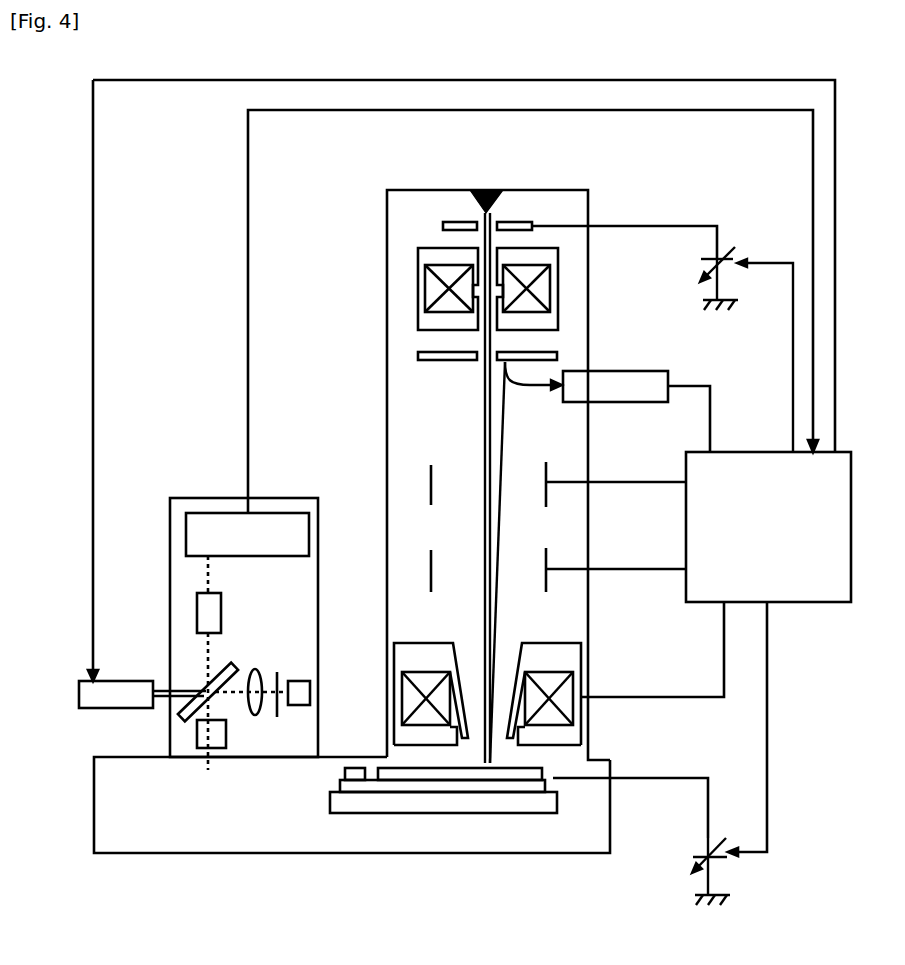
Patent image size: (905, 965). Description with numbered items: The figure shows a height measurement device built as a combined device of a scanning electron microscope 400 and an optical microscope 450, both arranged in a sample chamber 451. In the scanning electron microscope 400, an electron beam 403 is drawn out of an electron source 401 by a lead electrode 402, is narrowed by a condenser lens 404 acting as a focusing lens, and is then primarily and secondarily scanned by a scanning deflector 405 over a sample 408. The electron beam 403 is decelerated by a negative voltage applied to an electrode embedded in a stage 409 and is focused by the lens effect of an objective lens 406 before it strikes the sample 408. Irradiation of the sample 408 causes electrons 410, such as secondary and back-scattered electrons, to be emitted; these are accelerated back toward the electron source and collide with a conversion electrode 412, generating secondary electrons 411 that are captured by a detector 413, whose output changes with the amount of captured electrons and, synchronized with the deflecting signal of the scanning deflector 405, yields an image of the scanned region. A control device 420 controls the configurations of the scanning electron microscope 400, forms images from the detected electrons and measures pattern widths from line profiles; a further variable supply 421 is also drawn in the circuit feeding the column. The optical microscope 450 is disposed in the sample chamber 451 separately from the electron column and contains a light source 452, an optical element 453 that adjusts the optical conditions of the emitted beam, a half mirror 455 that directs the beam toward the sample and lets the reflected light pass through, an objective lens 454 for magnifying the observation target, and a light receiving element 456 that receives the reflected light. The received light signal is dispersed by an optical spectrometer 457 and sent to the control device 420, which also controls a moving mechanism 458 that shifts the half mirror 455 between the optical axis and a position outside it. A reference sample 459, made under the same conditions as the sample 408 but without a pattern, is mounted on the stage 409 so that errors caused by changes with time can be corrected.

The scanning electron microscope 400 is at (562, 184).
The electron source 401 is at (468, 203).
The lead electrode 402 is at (443, 224).
The electron beam 403 is at (483, 247).
The condenser lens 404 is at (418, 288).
The scanning deflector 405 is at (550, 493).
The objective lens 406 is at (575, 648).
The sample 408 is at (545, 768).
The stage 409 is at (557, 798).
The electrons 410 is at (505, 412).
The secondary electrons 411 is at (533, 388).
The conversion electrode 412 is at (418, 354).
The detector 413 is at (637, 371).
The control device 420 is at (800, 603).
The variable power supply 421 is at (723, 862).
The optical microscope 450 is at (287, 478).
The sample chamber 451 is at (200, 858).
The light source 452 is at (312, 678).
The optical element 453 is at (263, 670).
The objective lens 454 is at (197, 735).
The half mirror 455 is at (213, 698).
The light receiving element 456 is at (197, 600).
The optical spectrometer 457 is at (207, 512).
The moving mechanism 458 is at (79, 682).
The reference sample 459 is at (345, 770).